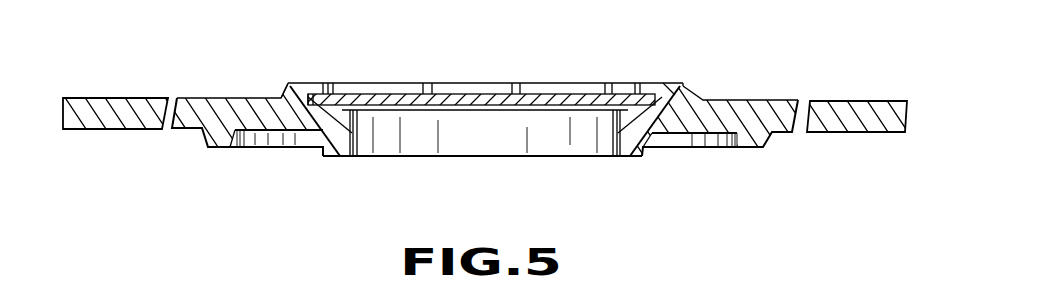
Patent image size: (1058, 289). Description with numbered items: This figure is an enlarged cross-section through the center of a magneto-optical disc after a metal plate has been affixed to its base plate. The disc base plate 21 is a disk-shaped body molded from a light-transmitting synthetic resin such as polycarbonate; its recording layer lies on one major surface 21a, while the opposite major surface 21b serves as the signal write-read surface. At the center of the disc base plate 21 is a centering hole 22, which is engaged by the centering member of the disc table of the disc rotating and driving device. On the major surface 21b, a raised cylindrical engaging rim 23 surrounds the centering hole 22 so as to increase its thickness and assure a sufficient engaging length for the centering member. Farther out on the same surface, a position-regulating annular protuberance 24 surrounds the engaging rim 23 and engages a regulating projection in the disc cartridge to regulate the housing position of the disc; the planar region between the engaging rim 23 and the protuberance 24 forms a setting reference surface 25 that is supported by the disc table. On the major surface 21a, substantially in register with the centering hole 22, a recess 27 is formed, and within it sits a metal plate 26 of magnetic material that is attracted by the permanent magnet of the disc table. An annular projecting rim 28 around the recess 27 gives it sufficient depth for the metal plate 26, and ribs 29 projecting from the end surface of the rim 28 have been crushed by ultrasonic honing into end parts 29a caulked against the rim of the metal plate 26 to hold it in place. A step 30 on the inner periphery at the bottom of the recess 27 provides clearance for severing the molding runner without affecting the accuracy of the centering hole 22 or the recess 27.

The disc base plate 21 is at (895, 101).
The major surface 21a is at (768, 102).
The major surface 21b is at (112, 130).
The centering hole 22 is at (612, 145).
The engaging rim 23 is at (337, 147).
The position-regulating annular protuberance 24 is at (767, 145).
The setting reference surface 25 is at (708, 147).
The metal plate 26 is at (558, 102).
The recess 27 is at (652, 83).
The annular projecting rim 28 is at (683, 83).
The ribs 29 is at (295, 82).
The end parts 29a is at (325, 83).
The step 30 is at (360, 83).